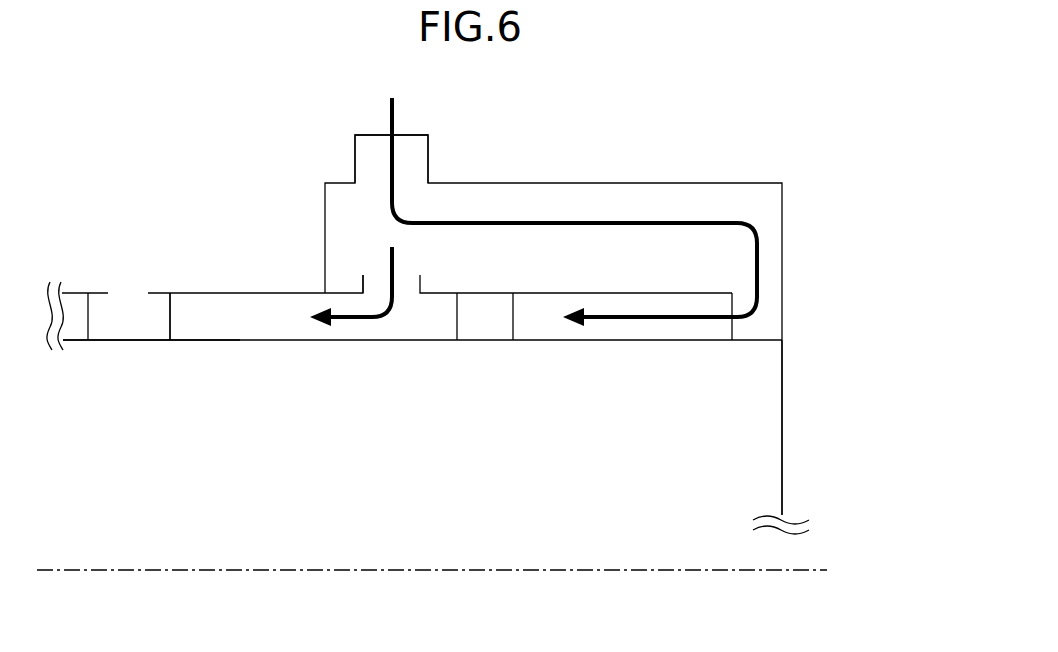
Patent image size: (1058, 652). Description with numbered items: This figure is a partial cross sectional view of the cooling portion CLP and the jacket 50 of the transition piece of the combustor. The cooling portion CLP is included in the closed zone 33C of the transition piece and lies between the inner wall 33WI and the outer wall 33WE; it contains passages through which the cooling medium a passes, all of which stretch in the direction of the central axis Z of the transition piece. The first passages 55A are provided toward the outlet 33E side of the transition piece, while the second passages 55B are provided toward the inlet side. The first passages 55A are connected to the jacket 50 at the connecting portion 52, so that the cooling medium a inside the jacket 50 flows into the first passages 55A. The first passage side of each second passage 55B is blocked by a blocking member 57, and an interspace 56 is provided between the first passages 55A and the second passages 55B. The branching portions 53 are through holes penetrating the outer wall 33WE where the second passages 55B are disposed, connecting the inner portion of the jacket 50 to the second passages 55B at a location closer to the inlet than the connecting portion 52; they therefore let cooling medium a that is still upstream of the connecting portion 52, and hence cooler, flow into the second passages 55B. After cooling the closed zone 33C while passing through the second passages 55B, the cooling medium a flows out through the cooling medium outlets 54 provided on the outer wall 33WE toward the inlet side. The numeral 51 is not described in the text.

The closed zone 33C is at (174, 107).
The jacket 50 is at (658, 182).
The inlet port 51 is at (412, 132).
The cooling medium a is at (392, 137).
The connecting portion 52 is at (765, 298).
The branching portion 53 is at (408, 293).
The outer wall 33WE is at (540, 292).
The inner wall 33WI is at (238, 340).
The cooling medium outlet 54 is at (126, 280).
The second passage 55B is at (303, 328).
The blocking member 57 is at (455, 325).
The interspace 56 is at (502, 328).
The first passage 55A is at (637, 327).
The outlet 33E is at (790, 430).
The cooling portion CLP is at (172, 393).
The central axis Z is at (446, 572).